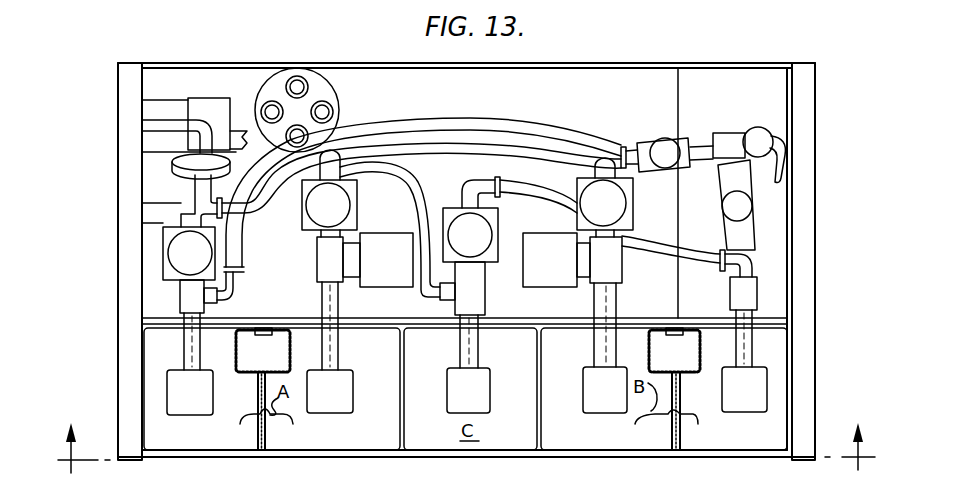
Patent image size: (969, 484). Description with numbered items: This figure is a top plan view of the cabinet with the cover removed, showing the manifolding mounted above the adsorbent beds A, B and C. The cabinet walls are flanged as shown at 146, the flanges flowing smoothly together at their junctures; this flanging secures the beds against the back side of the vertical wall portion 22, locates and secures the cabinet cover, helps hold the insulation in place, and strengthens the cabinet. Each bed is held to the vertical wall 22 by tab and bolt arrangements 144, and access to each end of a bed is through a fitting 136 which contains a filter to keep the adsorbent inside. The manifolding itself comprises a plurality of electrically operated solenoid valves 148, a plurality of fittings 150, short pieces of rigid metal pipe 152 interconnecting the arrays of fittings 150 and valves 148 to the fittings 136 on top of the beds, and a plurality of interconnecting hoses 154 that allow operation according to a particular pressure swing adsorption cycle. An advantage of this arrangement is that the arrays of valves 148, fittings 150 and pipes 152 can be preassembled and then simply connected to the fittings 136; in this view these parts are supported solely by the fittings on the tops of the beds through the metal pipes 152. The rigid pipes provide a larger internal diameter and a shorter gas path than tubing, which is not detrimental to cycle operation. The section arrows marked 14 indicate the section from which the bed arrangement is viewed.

The flanges 146 is at (128, 122).
The vertical wall portion 22 is at (153, 313).
The solenoid valves 148 is at (205, 264).
The fittings 150 is at (181, 299).
The metal pipes 152 is at (320, 298).
The fitting 136 is at (207, 404).
The tab and bolt arrangements 144 is at (281, 357).
The interconnecting hoses 154 is at (520, 183).
The section line 14 is at (463, 445).